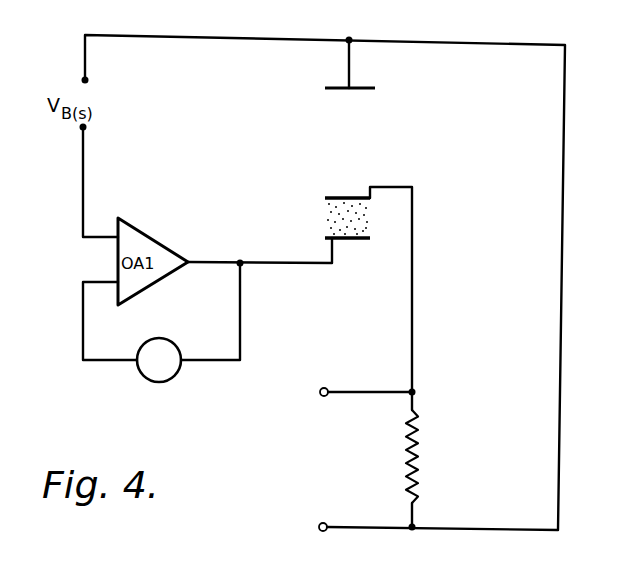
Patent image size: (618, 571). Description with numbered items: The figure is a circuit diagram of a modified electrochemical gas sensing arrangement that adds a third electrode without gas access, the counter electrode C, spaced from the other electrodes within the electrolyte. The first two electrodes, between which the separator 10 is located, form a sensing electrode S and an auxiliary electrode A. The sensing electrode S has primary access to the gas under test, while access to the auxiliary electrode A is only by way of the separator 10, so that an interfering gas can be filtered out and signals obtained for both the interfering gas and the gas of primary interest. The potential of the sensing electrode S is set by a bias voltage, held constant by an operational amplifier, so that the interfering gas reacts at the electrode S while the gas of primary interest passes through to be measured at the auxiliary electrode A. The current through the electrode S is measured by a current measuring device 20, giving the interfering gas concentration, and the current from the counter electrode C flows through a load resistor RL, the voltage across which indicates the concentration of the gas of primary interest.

The separator 10 is at (366, 218).
The current measuring device 20 is at (163, 368).
The counter electrode C is at (362, 86).
The auxiliary electrode A is at (325, 197).
The sensing electrode S is at (325, 238).
The load resistor RL is at (416, 443).